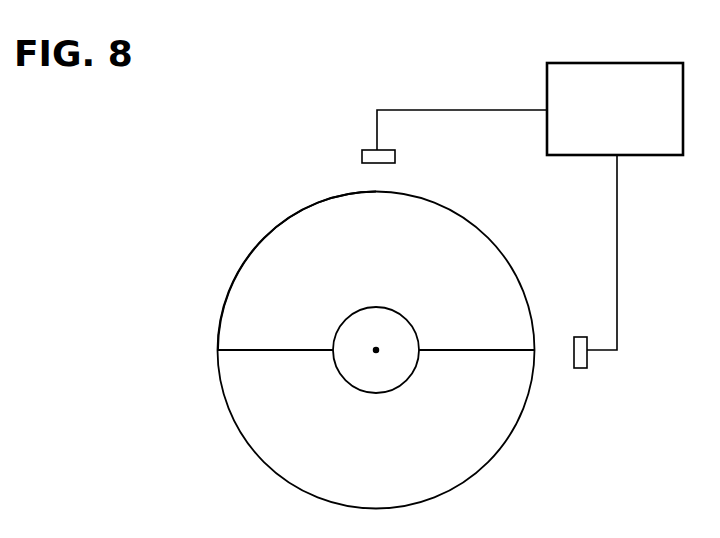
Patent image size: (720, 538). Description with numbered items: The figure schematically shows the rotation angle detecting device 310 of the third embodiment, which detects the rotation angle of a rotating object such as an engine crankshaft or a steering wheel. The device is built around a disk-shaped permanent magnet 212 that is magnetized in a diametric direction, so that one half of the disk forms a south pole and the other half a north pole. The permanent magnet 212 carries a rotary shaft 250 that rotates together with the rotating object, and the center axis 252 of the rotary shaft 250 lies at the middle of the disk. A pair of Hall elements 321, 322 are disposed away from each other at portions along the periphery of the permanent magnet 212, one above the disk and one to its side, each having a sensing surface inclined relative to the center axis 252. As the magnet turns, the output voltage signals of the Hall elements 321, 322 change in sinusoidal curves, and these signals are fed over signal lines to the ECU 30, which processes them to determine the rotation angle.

The rotation angle detecting device 310 is at (239, 239).
The permanent magnet 212 is at (513, 267).
The rotary shaft 250 is at (390, 366).
The center axis 252 is at (376, 353).
The ECU 30 is at (615, 62).
The Hall element 321 is at (362, 157).
The Hall element 322 is at (580, 369).